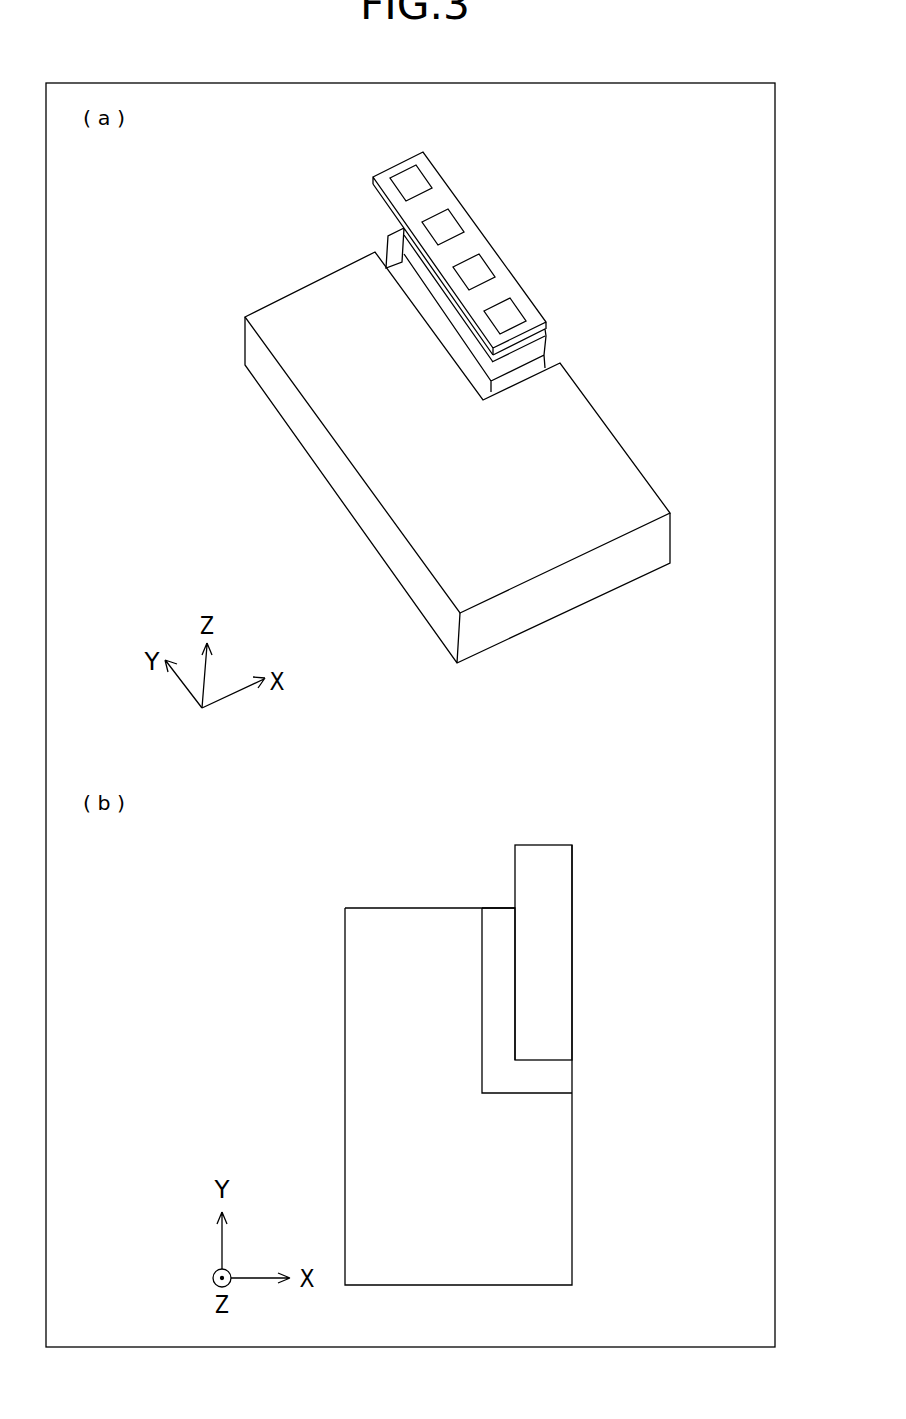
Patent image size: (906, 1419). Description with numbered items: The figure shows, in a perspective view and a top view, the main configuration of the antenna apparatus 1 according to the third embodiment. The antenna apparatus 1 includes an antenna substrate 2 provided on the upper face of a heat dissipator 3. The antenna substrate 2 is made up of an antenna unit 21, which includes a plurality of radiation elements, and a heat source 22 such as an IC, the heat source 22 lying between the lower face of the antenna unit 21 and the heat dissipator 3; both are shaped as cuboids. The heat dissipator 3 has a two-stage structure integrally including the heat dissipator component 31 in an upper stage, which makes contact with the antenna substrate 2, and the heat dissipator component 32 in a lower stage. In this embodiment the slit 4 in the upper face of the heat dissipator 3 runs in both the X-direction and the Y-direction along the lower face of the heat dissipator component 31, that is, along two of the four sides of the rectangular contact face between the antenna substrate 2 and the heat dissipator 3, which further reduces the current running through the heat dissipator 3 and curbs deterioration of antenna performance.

The antenna apparatus 1 is at (222, 181).
The antenna substrate 2 is at (600, 252).
The antenna unit 21 is at (510, 287).
The heat source 22 is at (547, 332).
The heat dissipator 3 is at (673, 335).
The heat dissipator component 31 is at (537, 348).
The heat dissipator component 32 is at (568, 418).
The slit 4 is at (403, 277).